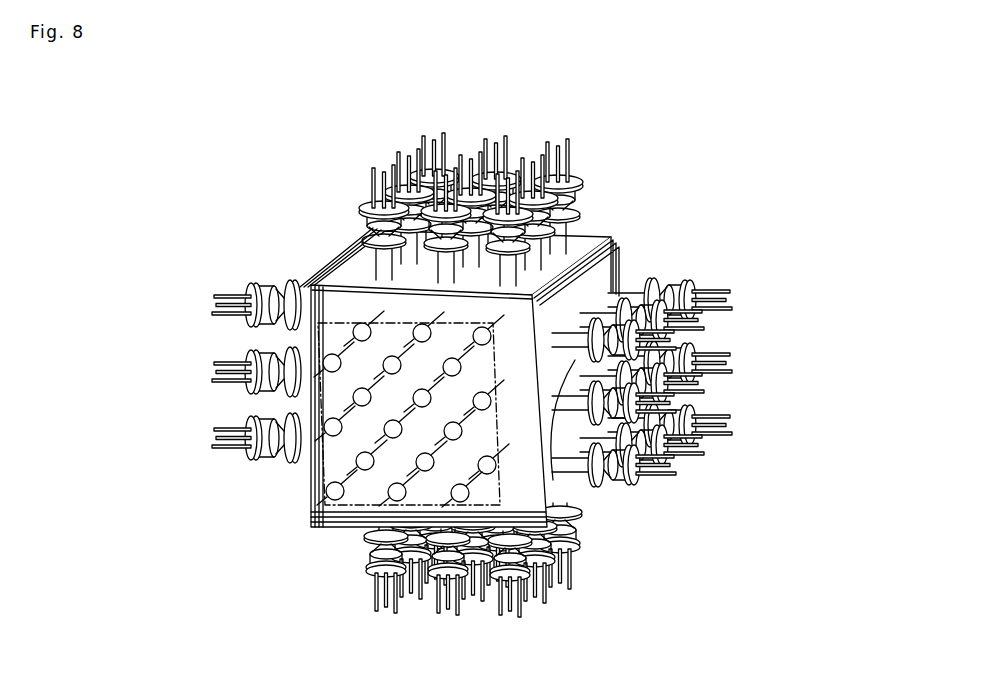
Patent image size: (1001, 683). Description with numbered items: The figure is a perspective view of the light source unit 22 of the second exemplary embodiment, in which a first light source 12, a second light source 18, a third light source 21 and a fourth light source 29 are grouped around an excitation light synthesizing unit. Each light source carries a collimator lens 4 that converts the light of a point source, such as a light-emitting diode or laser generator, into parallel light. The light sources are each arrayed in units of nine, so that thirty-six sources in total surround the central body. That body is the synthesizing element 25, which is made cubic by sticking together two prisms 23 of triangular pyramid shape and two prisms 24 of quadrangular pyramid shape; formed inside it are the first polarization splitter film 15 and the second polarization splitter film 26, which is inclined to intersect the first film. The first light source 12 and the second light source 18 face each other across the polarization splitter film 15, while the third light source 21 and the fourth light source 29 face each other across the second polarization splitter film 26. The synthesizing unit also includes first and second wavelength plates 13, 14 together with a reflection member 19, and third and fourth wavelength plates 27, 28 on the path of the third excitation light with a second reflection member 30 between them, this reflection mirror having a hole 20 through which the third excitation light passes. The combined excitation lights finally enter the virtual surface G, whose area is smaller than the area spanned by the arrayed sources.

The collimator lens 4 is at (442, 359).
The first light source 12 is at (252, 294).
The first wavelength plate 13 is at (311, 513).
The second wavelength plate 14 is at (318, 513).
The polarization splitter film 15 is at (487, 277).
The second light source 18 is at (637, 483).
The reflection member 19 is at (345, 268).
The hole 20 is at (293, 290).
The third light source 21 is at (454, 569).
The light source unit 22 is at (460, 348).
The prism having triangular pyramid shape 23 is at (563, 272).
The prism having quadrangular pyramid shape 24 is at (575, 264).
The synthesizing element 25 is at (633, 237).
The second polarization splitter film 26 is at (560, 448).
The third wavelength plate 27 is at (528, 535).
The fourth wavelength plate 28 is at (560, 542).
The fourth light source 29 is at (384, 218).
The second reflection member 30 is at (363, 541).
The virtual surface G is at (305, 474).